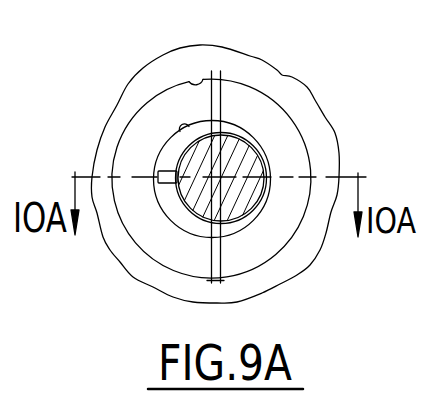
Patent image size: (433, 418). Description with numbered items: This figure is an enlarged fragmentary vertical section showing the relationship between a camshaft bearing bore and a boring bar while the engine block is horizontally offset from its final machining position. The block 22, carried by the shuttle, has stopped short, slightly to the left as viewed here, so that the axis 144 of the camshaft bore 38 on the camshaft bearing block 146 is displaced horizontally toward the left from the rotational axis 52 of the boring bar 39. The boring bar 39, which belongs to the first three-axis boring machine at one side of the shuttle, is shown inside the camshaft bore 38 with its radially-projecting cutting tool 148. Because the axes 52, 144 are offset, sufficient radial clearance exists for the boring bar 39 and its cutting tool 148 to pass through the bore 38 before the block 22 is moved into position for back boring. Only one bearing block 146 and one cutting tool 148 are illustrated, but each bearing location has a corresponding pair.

The block 22 is at (281, 74).
The camshaft bore 38 is at (170, 171).
The boring bar 39 is at (193, 209).
The rotational axis 52 is at (240, 65).
The axis of bore 144 is at (188, 81).
The camshaft bearing block 146 is at (278, 122).
The cutting tool 148 is at (183, 128).